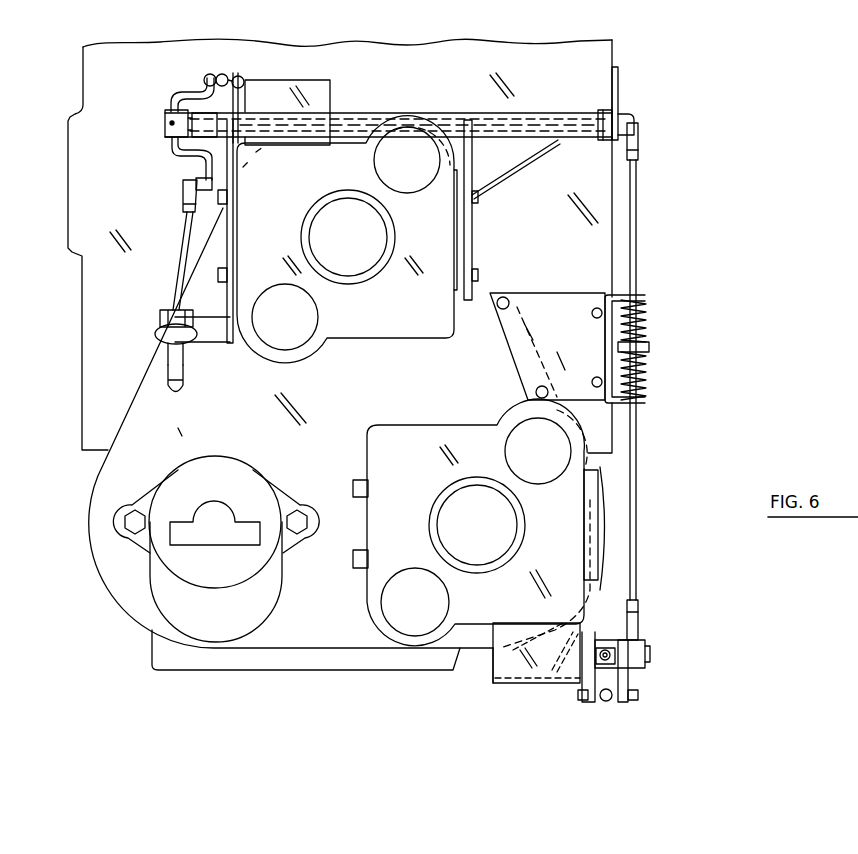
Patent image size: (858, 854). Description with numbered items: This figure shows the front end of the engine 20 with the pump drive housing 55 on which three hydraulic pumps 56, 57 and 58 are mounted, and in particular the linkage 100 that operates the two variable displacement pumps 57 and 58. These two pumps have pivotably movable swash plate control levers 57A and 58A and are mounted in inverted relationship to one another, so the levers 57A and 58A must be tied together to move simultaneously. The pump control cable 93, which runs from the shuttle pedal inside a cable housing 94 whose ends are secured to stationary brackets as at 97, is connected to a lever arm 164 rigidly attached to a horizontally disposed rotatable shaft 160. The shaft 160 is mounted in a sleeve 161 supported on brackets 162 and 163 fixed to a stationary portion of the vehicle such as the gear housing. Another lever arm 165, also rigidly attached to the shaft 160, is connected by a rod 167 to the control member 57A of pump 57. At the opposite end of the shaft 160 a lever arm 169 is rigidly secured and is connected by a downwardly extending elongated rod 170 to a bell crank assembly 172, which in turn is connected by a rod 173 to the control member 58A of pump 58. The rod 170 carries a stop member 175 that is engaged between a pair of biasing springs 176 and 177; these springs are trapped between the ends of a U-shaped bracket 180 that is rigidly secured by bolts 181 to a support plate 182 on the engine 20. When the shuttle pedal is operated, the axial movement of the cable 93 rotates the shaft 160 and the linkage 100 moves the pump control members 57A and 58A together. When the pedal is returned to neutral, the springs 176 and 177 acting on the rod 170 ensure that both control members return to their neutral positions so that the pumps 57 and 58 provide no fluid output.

The engine 20 is at (80, 438).
The pump drive housing 55 is at (90, 531).
The hydraulic pump 56 is at (162, 593).
The hydraulic pump 57 is at (395, 340).
The swash plate control lever 57A is at (233, 100).
The hydraulic pump 58 is at (405, 426).
The swash plate control lever 58A is at (580, 685).
The pump control cable 93 is at (182, 245).
The cable housing 94 is at (172, 386).
The cable housing securement 97 is at (160, 334).
The linkage 100 is at (170, 108).
The rotatable shaft 160 is at (580, 138).
The sleeve 161 is at (602, 141).
The bracket 162 is at (230, 346).
The bracket 163 is at (478, 234).
The lever arm 164 is at (177, 157).
The lever arm 165 is at (187, 90).
The rod 167 is at (222, 74).
The lever arm 169 is at (622, 108).
The elongated rod 170 is at (638, 193).
The bell crank assembly 172 is at (630, 682).
The rod 173 is at (607, 701).
The stop member 175 is at (648, 347).
The biasing spring 176 is at (645, 332).
The biasing spring 177 is at (645, 373).
The U-shaped bracket 180 is at (648, 401).
The bolts 181 is at (592, 315).
The support plate 182 is at (545, 297).